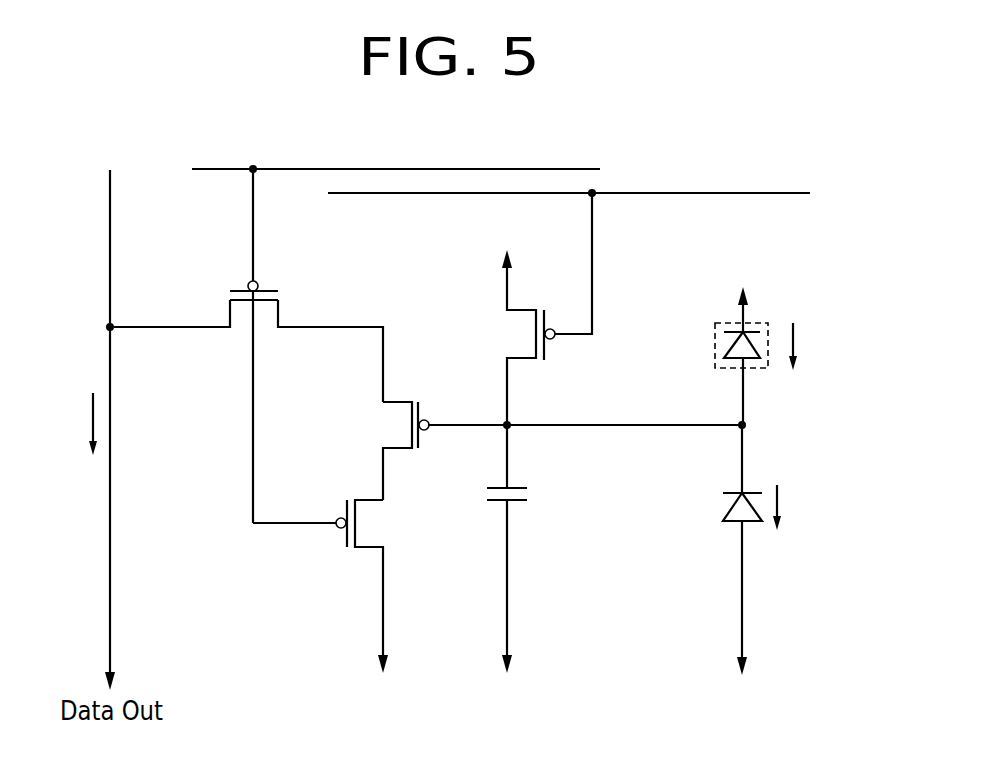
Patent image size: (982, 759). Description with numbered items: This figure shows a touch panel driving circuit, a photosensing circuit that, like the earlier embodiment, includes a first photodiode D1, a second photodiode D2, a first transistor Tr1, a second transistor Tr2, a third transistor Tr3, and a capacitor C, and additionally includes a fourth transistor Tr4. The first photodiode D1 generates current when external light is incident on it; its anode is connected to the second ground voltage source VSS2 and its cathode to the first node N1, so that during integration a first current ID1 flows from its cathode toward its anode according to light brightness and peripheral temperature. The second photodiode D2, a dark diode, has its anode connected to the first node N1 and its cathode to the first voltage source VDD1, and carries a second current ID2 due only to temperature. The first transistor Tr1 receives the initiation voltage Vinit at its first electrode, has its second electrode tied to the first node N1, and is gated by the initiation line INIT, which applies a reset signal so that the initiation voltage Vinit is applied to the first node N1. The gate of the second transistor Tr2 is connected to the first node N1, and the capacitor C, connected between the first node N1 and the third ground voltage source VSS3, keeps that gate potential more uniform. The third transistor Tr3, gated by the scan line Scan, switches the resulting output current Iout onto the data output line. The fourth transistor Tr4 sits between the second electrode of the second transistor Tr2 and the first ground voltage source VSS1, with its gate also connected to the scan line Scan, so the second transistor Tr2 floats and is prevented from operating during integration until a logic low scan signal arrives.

The first transistor Tr1 is at (529, 309).
The second transistor Tr2 is at (544, 451).
The third transistor Tr3 is at (246, 346).
The fourth transistor Tr4 is at (341, 579).
The first photodiode D1 is at (721, 542).
The second photodiode D2 is at (723, 364).
The capacitor C is at (520, 541).
The first node N1 is at (761, 424).
The scan line Scan is at (363, 157).
The initiation line INIT is at (595, 193).
The initiation voltage Vinit is at (512, 235).
The first voltage source VDD1 is at (751, 270).
The first ground voltage source VSS1 is at (390, 690).
The second ground voltage source VSS2 is at (747, 693).
The third ground voltage source VSS3 is at (514, 690).
The output current Iout is at (77, 424).
The first current ID1 is at (798, 507).
The second current ID2 is at (812, 346).